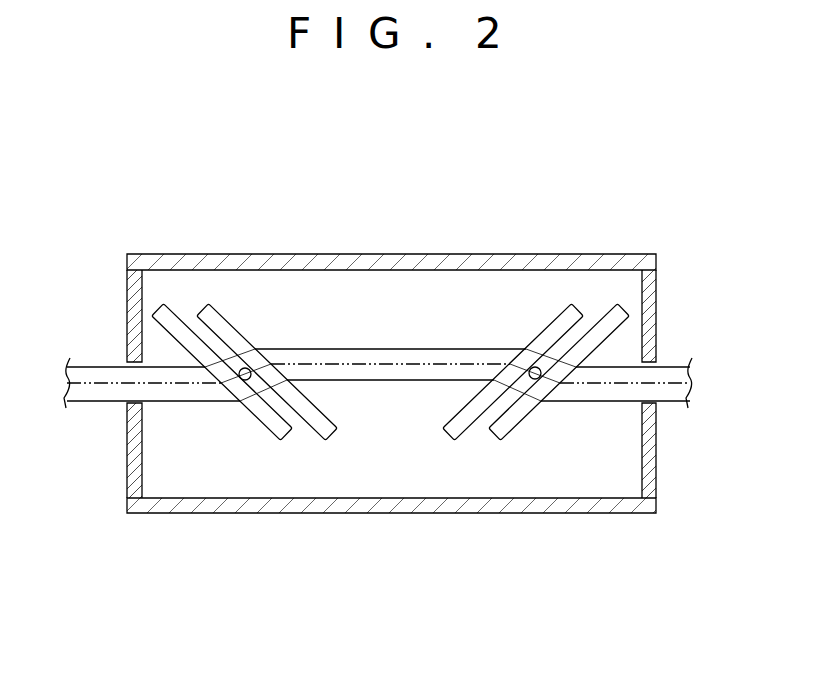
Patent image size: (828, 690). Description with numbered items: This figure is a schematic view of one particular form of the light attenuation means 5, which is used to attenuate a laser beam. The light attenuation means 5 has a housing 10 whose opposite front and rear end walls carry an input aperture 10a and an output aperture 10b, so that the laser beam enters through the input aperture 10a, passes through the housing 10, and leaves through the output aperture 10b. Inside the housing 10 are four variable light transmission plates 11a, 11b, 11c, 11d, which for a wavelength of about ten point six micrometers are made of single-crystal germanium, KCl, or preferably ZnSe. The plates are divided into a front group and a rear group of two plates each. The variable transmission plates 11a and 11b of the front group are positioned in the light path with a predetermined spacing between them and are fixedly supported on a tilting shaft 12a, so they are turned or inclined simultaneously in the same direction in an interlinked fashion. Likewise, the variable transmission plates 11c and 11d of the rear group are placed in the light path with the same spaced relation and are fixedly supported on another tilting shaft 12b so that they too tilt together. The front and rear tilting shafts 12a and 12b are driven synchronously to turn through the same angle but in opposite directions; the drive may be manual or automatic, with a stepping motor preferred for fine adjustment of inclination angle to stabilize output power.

The light attenuation means 5 is at (580, 215).
The housing 10 is at (333, 262).
The input aperture 10a is at (137, 383).
The output aperture 10b is at (647, 365).
The variable light transmission plate 11a is at (160, 310).
The variable light transmission plate 11b is at (214, 314).
The variable light transmission plate 11c is at (466, 432).
The variable light transmission plate 11d is at (513, 432).
The tilting shaft 12a is at (243, 380).
The tilting shaft 12b is at (533, 367).